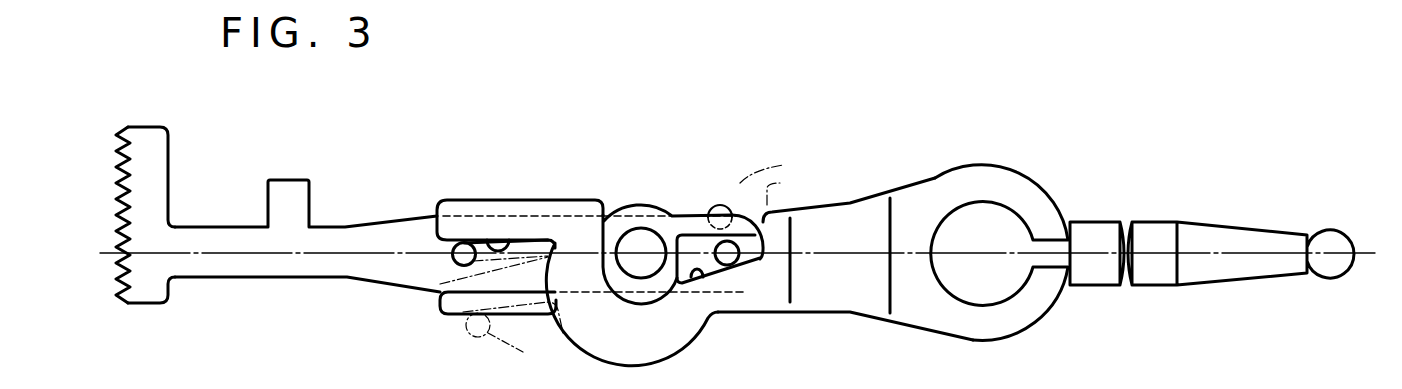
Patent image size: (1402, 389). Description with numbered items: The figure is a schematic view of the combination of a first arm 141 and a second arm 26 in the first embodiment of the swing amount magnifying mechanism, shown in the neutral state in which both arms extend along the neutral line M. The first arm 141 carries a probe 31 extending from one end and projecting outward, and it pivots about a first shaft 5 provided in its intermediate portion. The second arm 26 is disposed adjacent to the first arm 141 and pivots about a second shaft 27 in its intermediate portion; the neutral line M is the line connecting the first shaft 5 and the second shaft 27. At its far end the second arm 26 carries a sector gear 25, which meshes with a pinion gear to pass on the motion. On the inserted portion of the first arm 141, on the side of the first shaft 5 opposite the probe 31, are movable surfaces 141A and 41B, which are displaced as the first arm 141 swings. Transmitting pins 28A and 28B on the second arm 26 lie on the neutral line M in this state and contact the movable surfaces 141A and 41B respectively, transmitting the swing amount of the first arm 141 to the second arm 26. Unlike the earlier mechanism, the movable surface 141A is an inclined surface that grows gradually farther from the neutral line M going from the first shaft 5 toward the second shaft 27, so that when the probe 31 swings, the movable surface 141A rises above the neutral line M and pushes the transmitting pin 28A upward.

The sector gear 25 is at (148, 165).
The second arm 26 is at (393, 227).
The movable surface 41B is at (510, 240).
The second shaft 27 is at (641, 253).
The movable surface 141A is at (697, 215).
The transmitting pin 28A is at (708, 212).
The transmitting pin 28B is at (458, 267).
The first arm 141 is at (850, 222).
The first shaft 5 is at (983, 253).
The probe 31 is at (1240, 240).
The neutral line M is at (1363, 253).